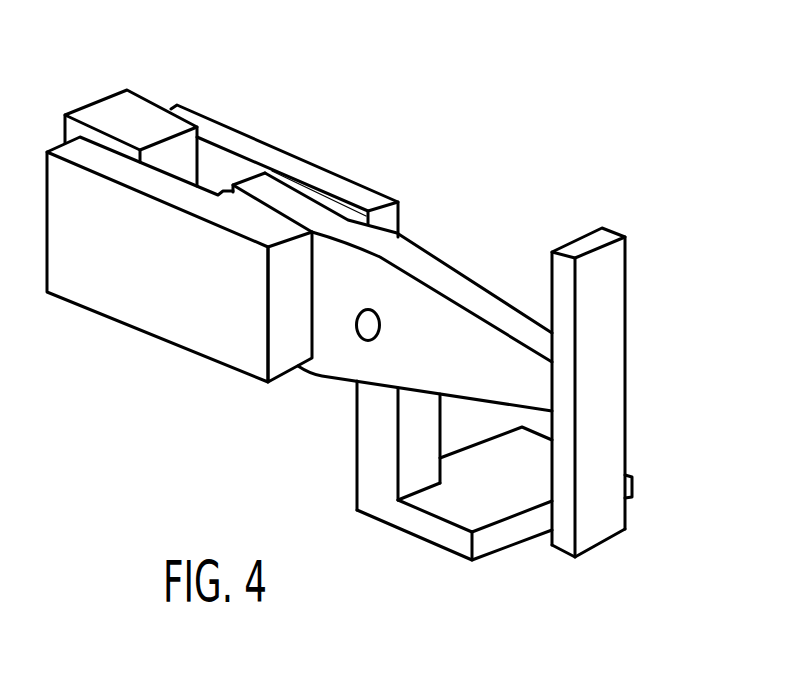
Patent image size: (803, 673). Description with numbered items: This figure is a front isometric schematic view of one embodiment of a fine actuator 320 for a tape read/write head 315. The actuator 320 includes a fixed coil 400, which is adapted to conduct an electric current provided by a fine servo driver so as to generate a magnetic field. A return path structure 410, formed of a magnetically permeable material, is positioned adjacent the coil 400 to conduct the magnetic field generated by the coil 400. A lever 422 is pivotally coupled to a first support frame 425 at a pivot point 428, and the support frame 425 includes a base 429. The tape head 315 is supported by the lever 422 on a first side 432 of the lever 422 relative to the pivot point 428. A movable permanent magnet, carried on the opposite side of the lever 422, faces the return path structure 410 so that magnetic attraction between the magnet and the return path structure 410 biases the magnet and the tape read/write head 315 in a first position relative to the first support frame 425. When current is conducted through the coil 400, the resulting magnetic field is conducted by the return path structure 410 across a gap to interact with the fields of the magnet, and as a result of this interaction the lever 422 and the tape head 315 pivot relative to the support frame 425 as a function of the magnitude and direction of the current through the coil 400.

The tape read/write head 315 is at (612, 295).
The fine actuator 320 is at (256, 122).
The fixed coil 400 is at (110, 108).
The return path structure 410 is at (107, 324).
The lever 422 is at (433, 243).
The first support frame 425 is at (370, 470).
The pivot point 428 is at (357, 337).
The base 429 is at (492, 540).
The first side 432 is at (465, 278).